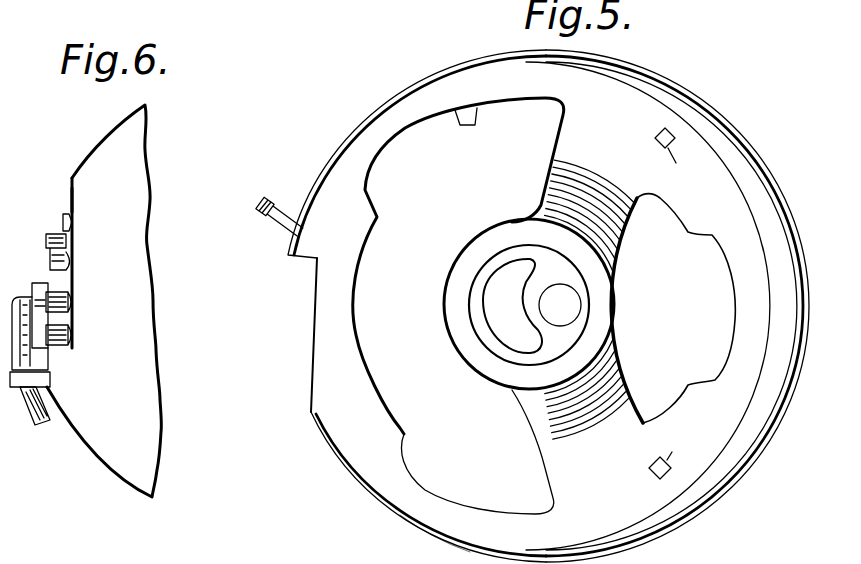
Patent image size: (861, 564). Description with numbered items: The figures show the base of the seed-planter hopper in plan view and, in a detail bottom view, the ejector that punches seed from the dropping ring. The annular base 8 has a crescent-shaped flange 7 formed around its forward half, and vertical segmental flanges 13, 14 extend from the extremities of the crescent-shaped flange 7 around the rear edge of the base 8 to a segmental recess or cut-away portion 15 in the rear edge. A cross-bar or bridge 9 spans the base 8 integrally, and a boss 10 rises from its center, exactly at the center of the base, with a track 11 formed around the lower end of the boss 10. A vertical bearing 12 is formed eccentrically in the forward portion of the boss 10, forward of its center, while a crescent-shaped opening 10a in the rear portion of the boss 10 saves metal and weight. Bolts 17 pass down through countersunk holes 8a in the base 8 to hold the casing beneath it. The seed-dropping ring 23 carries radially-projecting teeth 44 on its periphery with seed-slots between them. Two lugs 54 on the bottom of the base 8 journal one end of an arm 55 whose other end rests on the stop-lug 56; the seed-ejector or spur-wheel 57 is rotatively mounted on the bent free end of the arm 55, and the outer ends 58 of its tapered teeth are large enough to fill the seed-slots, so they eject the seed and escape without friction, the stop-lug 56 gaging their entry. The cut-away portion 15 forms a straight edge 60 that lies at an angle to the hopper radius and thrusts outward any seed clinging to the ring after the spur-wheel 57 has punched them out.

In FIG. 5, the crescent-shaped flange 7 is at (667, 306).
In FIG. 6, the annular base 8 is at (104, 301).
In FIG. 5, the annular base 8 is at (740, 327).
In FIG. 5, the countersunk holes 8a is at (638, 468).
In FIG. 5, the cross-bar or bridge 9 is at (553, 183).
In FIG. 5, the boss 10 is at (512, 222).
In FIG. 5, the crescent-shaped opening 10a is at (508, 324).
In FIG. 5, the track 11 is at (472, 264).
In FIG. 5, the vertical bearing 12 is at (572, 305).
In FIG. 5, the vertical segmental flange 13 is at (329, 161).
In FIG. 5, the vertical segmental flange 14 is at (427, 532).
In FIG. 5, the segmental recess or cut-away portion 15 is at (384, 353).
In FIG. 5, the bolts 17 is at (676, 163).
In FIG. 6, the seed-dropping ring 23 is at (72, 323).
In FIG. 6, the radially-projecting teeth 44 is at (63, 222).
In FIG. 5, the lugs 54 is at (477, 118).
In FIG. 6, the arm 55 is at (35, 420).
In FIG. 6, the stop-lug 56 is at (50, 380).
In FIG. 5, the stop-lug 56 is at (262, 208).
In FIG. 6, the seed-ejector or spur-wheel 57 is at (50, 252).
In FIG. 6, the outer ends of teeth 58 is at (72, 302).
In FIG. 6, the straight edge 60 is at (72, 200).
In FIG. 5, the straight edge 60 is at (316, 301).